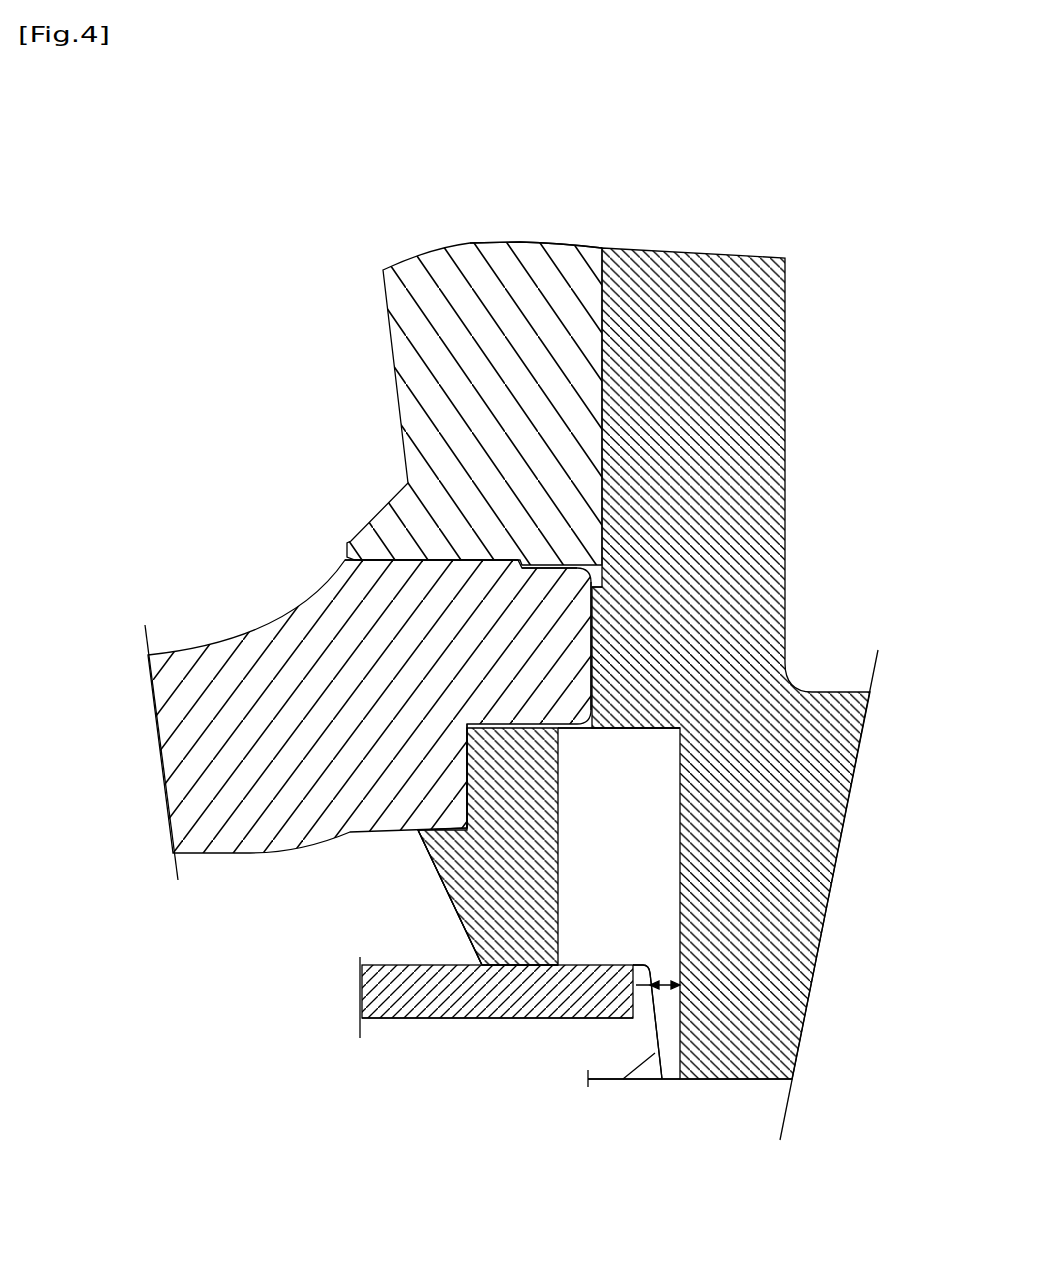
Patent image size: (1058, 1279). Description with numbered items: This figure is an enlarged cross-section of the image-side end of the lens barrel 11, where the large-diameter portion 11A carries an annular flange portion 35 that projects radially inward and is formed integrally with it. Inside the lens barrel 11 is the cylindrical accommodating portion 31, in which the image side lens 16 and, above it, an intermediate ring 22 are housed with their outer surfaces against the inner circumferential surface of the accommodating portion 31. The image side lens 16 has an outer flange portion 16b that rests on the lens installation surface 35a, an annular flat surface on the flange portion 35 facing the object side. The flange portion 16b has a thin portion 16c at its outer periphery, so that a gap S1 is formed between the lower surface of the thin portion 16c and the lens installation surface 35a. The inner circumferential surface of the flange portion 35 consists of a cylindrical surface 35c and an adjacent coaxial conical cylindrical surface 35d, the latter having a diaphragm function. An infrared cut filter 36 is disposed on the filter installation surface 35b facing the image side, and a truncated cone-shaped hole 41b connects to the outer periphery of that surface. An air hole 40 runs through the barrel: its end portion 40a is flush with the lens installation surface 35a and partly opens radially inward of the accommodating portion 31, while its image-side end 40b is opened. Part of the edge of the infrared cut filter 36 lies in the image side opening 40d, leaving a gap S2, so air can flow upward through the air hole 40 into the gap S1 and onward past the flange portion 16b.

The lens barrel 11 is at (785, 358).
The large-diameter portion 11A is at (822, 693).
The image side lens 16 is at (197, 697).
The flange portion 16b is at (488, 643).
The thin portion 16c is at (565, 610).
The intermediate ring 22 is at (380, 292).
The accommodating portion 31 is at (557, 307).
The flange portion 35 is at (466, 745).
The lens installation surface 35a is at (470, 622).
The filter installation surface 35b is at (455, 1018).
The cylindrical surface 35c is at (466, 802).
The conical cylindrical surface 35d is at (428, 855).
The infrared cut filter 36 is at (490, 1020).
The air hole 40 is at (560, 848).
The end portion 40a is at (625, 727).
The end 40b is at (637, 963).
The image side opening 40d is at (578, 965).
The hole 41b is at (608, 1082).
The gap S1 is at (598, 633).
The gap S2 is at (650, 980).